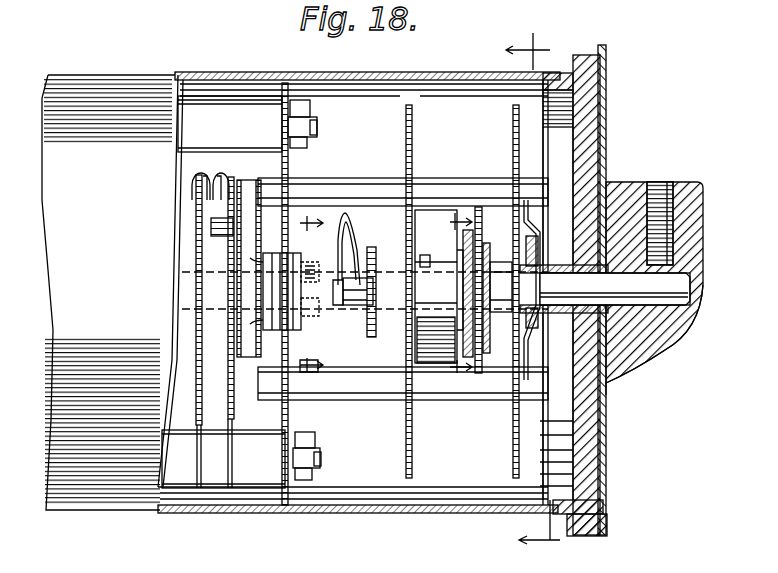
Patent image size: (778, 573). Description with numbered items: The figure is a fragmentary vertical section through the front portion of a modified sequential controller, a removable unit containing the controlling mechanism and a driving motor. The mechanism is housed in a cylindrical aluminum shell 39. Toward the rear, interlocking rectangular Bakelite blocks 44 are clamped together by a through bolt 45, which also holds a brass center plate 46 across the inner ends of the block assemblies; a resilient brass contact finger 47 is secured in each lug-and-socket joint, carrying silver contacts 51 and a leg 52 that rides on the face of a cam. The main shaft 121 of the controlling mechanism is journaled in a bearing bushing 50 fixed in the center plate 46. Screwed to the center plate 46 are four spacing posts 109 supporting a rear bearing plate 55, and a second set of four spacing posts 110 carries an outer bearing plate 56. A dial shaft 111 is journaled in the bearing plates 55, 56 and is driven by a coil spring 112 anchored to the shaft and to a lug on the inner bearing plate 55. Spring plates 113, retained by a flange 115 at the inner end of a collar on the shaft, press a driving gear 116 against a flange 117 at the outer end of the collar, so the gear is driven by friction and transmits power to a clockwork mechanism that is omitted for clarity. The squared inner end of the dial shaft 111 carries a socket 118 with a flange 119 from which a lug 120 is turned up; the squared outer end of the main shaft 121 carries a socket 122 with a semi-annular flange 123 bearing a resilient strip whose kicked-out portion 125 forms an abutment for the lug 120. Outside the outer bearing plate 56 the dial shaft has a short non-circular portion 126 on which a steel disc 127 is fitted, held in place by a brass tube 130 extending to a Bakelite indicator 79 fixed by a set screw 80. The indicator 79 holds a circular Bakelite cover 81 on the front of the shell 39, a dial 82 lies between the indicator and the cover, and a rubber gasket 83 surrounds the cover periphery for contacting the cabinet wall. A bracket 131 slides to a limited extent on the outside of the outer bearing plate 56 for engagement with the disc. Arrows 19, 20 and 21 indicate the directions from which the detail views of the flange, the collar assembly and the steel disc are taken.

The direction arrow 19 is at (310, 294).
The direction arrow 20 is at (420, 223).
The direction arrow 21 is at (533, 288).
The cylindrical aluminum shell 39 is at (168, 505).
The rectangular Bakelite blocks 44 is at (232, 93).
The through bolt 45 is at (312, 115).
The brass center plate 46 is at (288, 168).
The resilient brass contact finger 47 is at (205, 232).
The bearing bushing 50 is at (277, 295).
The silver contacts 51 is at (195, 178).
The leg 52 is at (212, 223).
The rear bearing plate 55 is at (410, 150).
The outer bearing plate 56 is at (513, 108).
The Bakelite indicator 79 is at (607, 162).
The set screw 80 is at (655, 182).
The circular molded Bakelite cover 81 is at (600, 110).
The dial 82 is at (600, 135).
The rubber gasket 83 is at (606, 55).
The spacing posts 109 is at (358, 185).
The spacing posts 110 is at (430, 185).
The dial shaft 111 is at (495, 283).
The coil spring 112 is at (428, 243).
The spring plates 113 is at (473, 237).
The flange 115 is at (453, 297).
The driving gear 116 is at (498, 362).
The flange 117 is at (482, 330).
The socket 118 is at (388, 262).
The flange 119 is at (372, 343).
The lug 120 is at (358, 287).
The main shaft 121 is at (262, 290).
The socket 122 is at (312, 368).
The semi-annular flange 123 is at (318, 214).
The kicked-out portion 125 is at (356, 292).
The non-circular portion 126 is at (612, 362).
The steel disc 127 is at (610, 393).
The tube of brass 130 is at (558, 266).
The bracket 131 is at (573, 421).